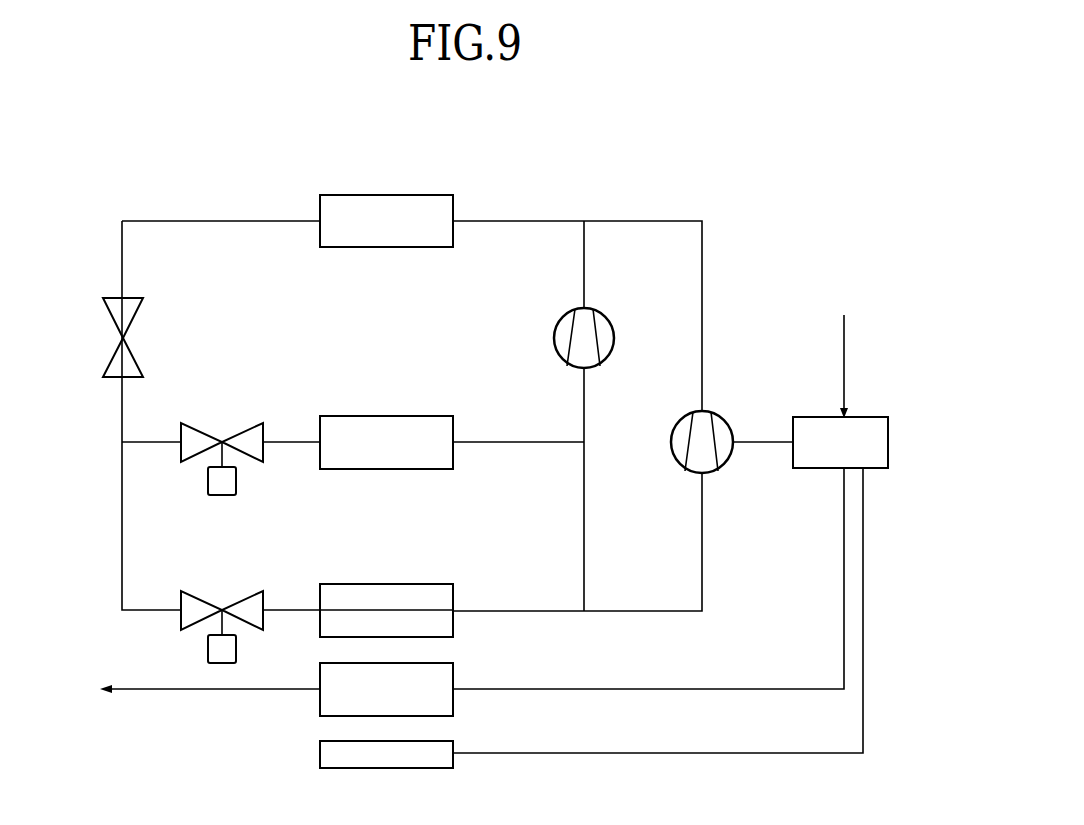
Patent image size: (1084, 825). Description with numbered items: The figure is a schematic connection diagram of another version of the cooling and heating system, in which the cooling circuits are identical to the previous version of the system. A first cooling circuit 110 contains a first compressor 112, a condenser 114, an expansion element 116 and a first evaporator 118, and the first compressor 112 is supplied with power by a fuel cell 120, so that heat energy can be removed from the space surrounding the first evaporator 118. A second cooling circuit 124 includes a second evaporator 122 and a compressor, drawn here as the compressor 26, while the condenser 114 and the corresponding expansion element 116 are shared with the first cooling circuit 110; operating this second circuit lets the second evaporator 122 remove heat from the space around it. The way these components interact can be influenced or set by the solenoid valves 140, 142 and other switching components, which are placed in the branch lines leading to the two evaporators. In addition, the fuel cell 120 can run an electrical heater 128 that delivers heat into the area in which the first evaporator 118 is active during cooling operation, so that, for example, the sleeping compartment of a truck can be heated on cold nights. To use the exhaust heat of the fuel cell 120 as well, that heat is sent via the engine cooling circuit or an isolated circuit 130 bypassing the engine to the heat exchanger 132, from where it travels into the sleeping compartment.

The first cooling circuit 110 is at (634, 219).
The condenser 114 is at (392, 194).
The expansion element 116 is at (132, 340).
The first evaporator 118 is at (389, 584).
The fuel cell 120 is at (792, 424).
The second evaporator 122 is at (390, 416).
The second cooling circuit 124 is at (142, 443).
The electrical heater 128 is at (326, 762).
The isolated circuit 130 is at (844, 328).
The heat exchanger 132 is at (450, 662).
The solenoid valve 140 is at (248, 432).
The solenoid valve 142 is at (248, 599).
The compressor 26 is at (555, 338).
The first compressor 112 is at (671, 438).